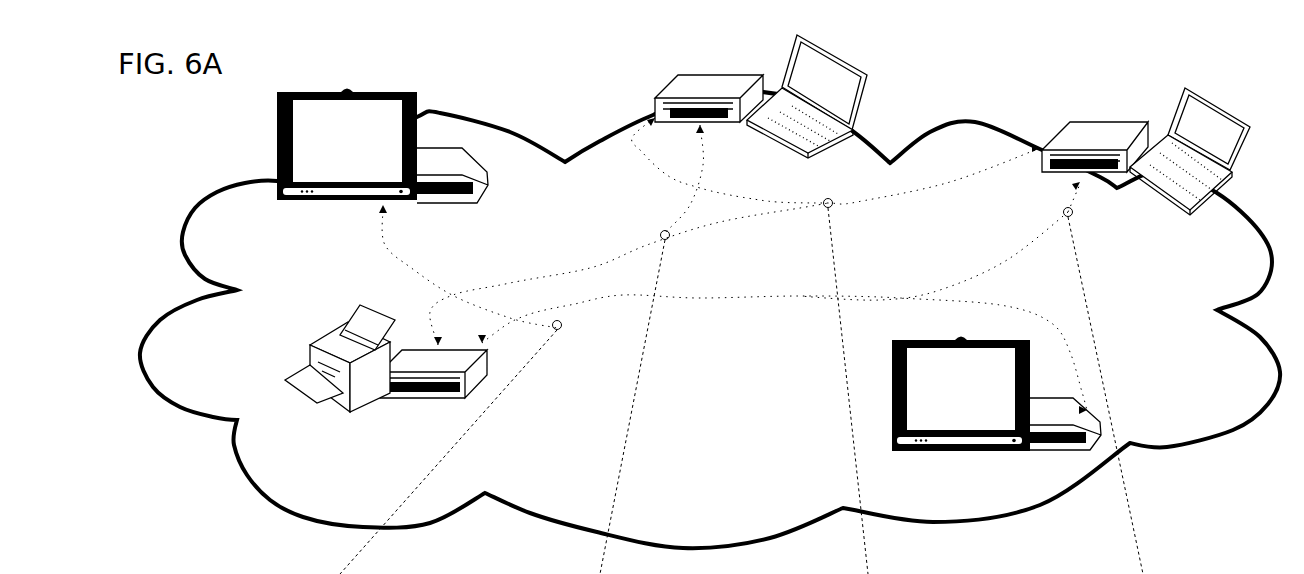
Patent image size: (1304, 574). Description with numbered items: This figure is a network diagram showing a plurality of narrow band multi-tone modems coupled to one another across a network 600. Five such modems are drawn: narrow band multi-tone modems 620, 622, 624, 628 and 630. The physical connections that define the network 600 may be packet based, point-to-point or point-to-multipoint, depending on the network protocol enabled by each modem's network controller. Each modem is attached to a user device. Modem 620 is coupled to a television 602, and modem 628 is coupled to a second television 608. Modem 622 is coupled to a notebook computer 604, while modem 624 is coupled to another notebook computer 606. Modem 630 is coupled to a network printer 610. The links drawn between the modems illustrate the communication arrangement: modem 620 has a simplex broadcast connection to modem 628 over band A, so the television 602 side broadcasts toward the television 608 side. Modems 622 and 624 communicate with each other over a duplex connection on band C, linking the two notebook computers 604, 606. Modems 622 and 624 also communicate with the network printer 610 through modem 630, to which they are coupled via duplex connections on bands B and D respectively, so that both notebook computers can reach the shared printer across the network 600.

The network 600 is at (202, 213).
The television 602 is at (313, 205).
The notebook computer 604 is at (785, 62).
The notebook computer 606 is at (1177, 108).
The television 608 is at (967, 458).
The network printer 610 is at (327, 407).
The narrow band multi-tone modem 620 is at (463, 203).
The narrow band multi-tone modem 622 is at (658, 96).
The narrow band multi-tone modem 624 is at (1105, 120).
The narrow band multi-tone modem 628 is at (1085, 453).
The narrow band multi-tone modem 630 is at (438, 400).